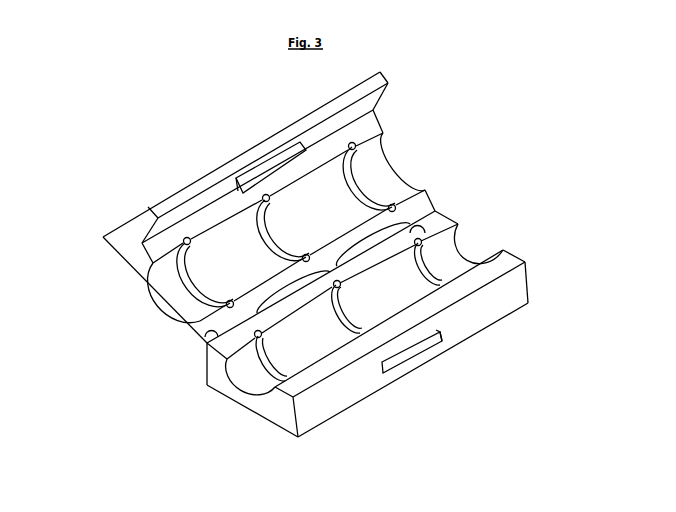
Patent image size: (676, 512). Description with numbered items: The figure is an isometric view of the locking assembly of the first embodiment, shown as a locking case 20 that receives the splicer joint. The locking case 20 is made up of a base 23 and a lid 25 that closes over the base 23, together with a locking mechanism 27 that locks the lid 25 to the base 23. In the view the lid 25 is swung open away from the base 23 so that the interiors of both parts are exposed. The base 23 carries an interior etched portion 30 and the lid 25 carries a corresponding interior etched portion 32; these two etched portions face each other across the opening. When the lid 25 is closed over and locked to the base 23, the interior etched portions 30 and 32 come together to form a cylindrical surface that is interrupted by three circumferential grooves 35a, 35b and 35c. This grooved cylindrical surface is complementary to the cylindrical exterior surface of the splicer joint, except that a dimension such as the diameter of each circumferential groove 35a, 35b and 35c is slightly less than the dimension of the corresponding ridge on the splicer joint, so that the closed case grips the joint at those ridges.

The locking case 20 is at (327, 250).
The base 23 is at (388, 324).
The lid 25 is at (281, 203).
The locking mechanism 27 is at (322, 261).
The interior etched portion 30 is at (209, 386).
The interior etched portion 32 is at (131, 293).
The circumferential groove 35a is at (365, 375).
The circumferential groove 35b is at (453, 311).
The circumferential groove 35c is at (504, 268).